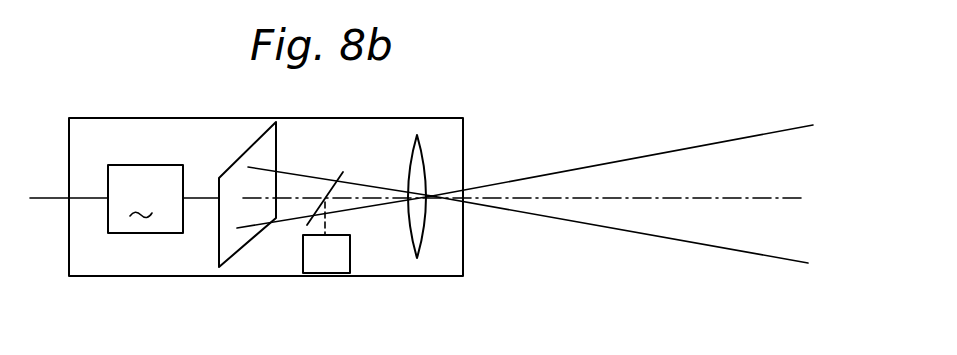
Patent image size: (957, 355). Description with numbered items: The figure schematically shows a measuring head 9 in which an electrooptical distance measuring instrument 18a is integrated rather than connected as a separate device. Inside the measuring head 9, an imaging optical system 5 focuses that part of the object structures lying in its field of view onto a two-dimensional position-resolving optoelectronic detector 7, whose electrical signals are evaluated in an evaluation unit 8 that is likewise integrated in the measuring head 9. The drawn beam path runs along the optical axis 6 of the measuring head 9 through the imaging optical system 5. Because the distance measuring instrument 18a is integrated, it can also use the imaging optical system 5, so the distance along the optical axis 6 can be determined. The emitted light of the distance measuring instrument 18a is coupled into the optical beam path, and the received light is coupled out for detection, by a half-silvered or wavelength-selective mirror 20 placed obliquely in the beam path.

The measuring head 9 is at (92, 277).
The optical axis 6 is at (656, 199).
The evaluation unit 8 is at (145, 199).
The two-dimensional position-resolving optoelectronic detector 7 is at (263, 145).
The half-silvered or wavelength-selective mirror 20 is at (337, 177).
The integrated distance measuring instrument 18a is at (328, 262).
The imaging optical system 5 is at (415, 158).